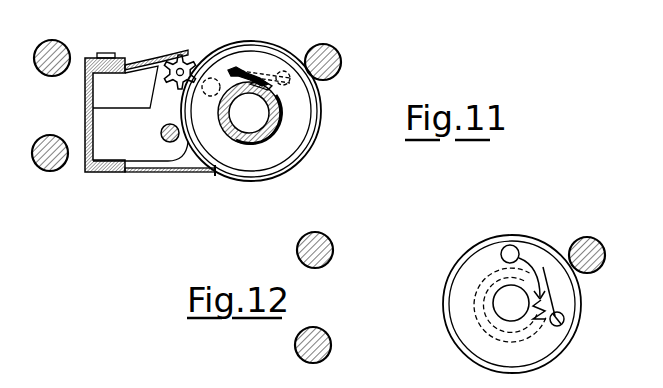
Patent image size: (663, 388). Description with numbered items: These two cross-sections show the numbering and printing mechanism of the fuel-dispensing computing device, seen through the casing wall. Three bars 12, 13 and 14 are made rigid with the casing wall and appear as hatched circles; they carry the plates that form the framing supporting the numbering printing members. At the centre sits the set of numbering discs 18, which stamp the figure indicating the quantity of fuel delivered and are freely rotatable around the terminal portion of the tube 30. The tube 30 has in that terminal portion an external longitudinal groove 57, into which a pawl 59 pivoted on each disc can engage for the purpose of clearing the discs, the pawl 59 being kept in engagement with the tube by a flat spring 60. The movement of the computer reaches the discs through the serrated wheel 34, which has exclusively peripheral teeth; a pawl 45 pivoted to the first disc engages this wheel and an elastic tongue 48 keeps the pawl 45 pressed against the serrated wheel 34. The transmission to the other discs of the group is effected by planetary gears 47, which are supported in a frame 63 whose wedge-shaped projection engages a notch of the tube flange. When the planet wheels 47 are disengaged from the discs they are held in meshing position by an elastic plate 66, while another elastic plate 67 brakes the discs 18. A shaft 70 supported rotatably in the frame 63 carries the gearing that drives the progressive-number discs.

In FIG. 11, the bar 12 is at (66, 44).
In FIG. 12, the bar 12 is at (333, 243).
In FIG. 11, the bar 13 is at (50, 144).
In FIG. 12, the bar 13 is at (328, 354).
In FIG. 11, the bar 14 is at (342, 60).
In FIG. 12, the bar 14 is at (588, 237).
In FIG. 11, the numbering discs 18 is at (292, 52).
In FIG. 12, the numbering discs 18 is at (483, 345).
In FIG. 11, the tube 30 is at (283, 127).
In FIG. 12, the serrated wheel 34 is at (493, 303).
In FIG. 12, the pawl 45 is at (523, 257).
In FIG. 11, the planetary gears 47 is at (186, 56).
In FIG. 12, the elastic tongue 48 is at (555, 297).
In FIG. 11, the longitudinal groove 57 is at (264, 81).
In FIG. 11, the pawl 59 is at (222, 82).
In FIG. 11, the flat spring 60 is at (250, 72).
In FIG. 11, the frame 63 is at (88, 174).
In FIG. 11, the elastic plate 66 is at (136, 64).
In FIG. 11, the elastic plate 67 is at (186, 174).
In FIG. 11, the shaft 70 is at (164, 143).